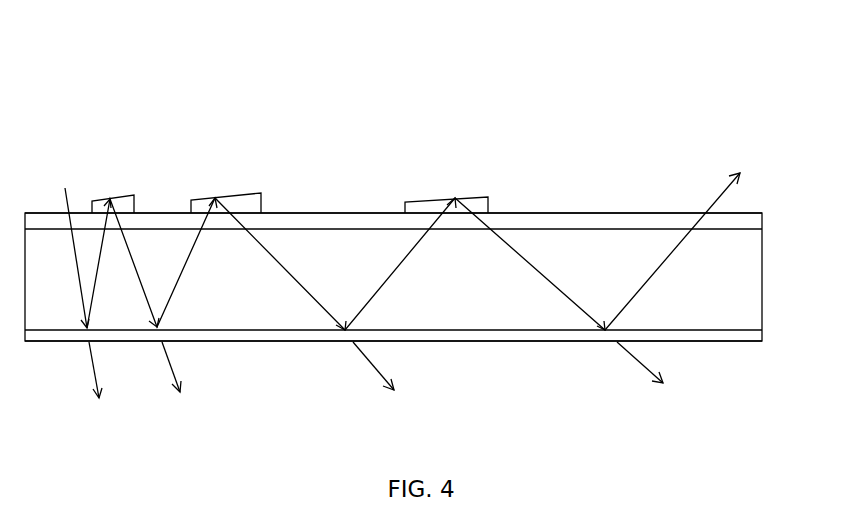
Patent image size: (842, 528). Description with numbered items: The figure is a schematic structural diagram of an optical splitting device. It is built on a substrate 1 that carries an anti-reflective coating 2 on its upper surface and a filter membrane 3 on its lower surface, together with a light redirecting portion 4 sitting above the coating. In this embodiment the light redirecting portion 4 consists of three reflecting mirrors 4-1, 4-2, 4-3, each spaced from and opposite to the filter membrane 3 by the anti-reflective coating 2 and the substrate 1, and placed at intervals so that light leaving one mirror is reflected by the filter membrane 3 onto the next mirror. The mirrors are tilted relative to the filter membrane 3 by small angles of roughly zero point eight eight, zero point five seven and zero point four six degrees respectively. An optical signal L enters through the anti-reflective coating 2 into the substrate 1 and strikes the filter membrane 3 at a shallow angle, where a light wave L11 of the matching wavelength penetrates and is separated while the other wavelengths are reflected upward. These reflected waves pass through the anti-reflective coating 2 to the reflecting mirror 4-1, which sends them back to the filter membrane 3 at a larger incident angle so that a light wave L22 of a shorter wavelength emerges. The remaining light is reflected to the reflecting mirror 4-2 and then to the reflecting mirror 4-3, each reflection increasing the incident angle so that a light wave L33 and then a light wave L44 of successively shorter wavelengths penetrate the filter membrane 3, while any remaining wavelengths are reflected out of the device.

The substrate 1 is at (748, 258).
The anti-reflective coating 2 is at (750, 218).
The filter membrane 3 is at (753, 333).
The light redirecting portion 4 is at (290, 120).
The reflecting mirror 4-1 is at (132, 193).
The reflecting mirror 4-2 is at (218, 198).
The reflecting mirror 4-3 is at (437, 202).
The optical signal L is at (66, 242).
The light wave L11 is at (103, 385).
The light wave L22 is at (182, 385).
The light wave L33 is at (382, 382).
The light wave L44 is at (646, 377).